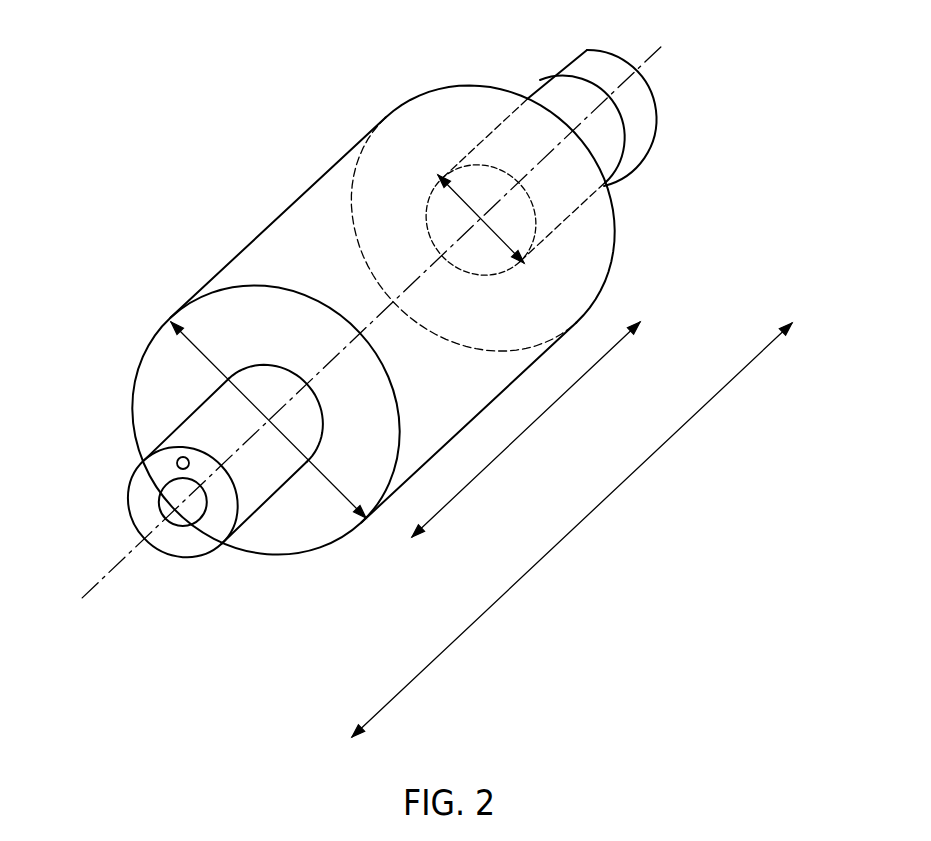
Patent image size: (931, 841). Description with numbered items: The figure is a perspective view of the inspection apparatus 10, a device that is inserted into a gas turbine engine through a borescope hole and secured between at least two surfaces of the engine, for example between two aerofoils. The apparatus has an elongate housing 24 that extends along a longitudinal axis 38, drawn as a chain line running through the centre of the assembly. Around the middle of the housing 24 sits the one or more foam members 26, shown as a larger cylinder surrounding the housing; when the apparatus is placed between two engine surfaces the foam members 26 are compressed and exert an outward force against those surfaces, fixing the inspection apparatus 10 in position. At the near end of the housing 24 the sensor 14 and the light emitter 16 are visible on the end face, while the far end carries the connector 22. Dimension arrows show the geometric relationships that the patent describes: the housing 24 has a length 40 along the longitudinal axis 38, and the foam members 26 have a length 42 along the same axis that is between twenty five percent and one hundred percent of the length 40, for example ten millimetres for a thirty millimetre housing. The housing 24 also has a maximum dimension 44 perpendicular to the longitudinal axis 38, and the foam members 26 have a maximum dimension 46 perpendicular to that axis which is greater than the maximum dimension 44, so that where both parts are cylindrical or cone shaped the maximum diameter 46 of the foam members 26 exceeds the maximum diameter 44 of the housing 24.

The inspection apparatus 10 is at (811, 130).
The sensor 14 is at (182, 527).
The light emitter 16 is at (176, 461).
The connector 22 is at (642, 126).
The housing 24 is at (544, 97).
The foam member 26 is at (318, 203).
The longitudinal axis 38 is at (84, 599).
The length of the housing 40 is at (547, 554).
The length of the foam members 42 is at (527, 430).
The maximum dimension of the housing 44 is at (507, 243).
The maximum dimension of the foam members 46 is at (332, 474).